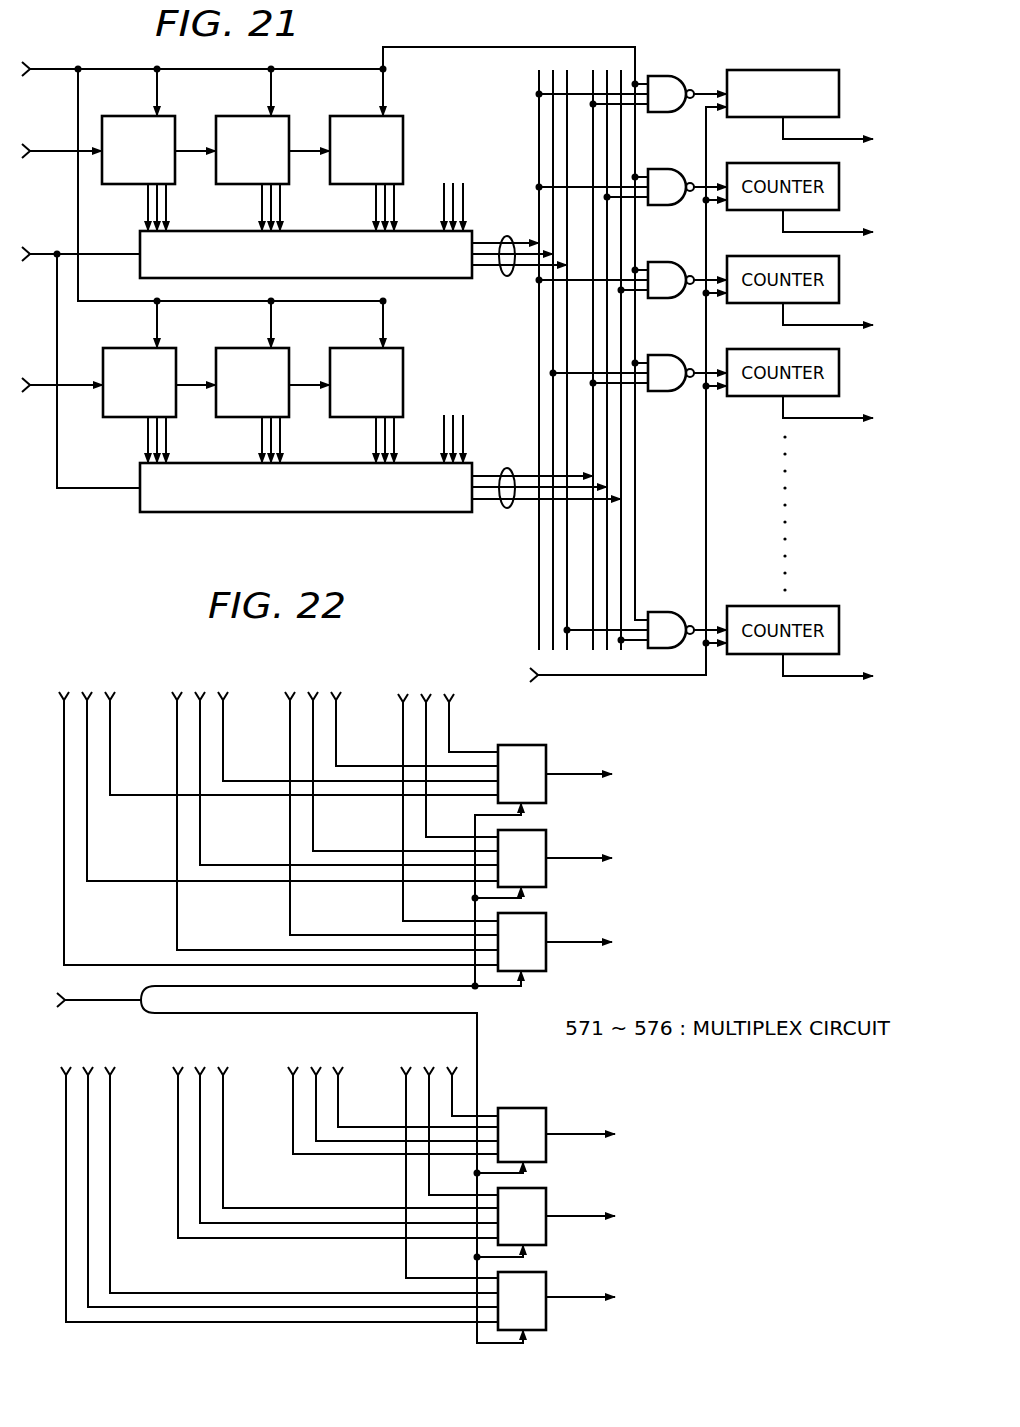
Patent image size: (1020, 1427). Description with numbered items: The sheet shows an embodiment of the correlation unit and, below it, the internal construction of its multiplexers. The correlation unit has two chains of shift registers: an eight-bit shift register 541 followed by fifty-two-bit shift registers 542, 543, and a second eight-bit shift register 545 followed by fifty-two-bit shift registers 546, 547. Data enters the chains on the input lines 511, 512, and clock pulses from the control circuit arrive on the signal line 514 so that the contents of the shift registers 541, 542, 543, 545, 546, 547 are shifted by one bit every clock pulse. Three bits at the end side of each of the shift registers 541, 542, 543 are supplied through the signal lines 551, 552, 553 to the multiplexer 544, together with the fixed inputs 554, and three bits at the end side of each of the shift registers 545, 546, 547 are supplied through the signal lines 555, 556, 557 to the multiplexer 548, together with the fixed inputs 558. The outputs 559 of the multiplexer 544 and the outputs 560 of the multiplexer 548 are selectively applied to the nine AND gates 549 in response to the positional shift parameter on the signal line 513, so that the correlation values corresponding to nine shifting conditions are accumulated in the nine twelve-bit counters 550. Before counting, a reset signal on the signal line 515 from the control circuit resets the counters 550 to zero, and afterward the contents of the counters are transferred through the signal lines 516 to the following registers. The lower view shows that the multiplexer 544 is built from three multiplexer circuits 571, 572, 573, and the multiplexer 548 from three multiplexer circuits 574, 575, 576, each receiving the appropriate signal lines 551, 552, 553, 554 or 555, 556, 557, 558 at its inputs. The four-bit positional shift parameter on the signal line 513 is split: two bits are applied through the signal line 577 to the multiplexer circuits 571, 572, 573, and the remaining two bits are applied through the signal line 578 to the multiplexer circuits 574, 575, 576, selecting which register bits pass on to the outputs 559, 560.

In FIG. 21, the first data input line 511 is at (50, 141).
In FIG. 21, the second data input line 512 is at (37, 378).
In FIG. 21, the signal line 513 is at (48, 244).
In FIG. 22, the signal line 513 is at (77, 1001).
In FIG. 21, the signal line 514 is at (52, 60).
In FIG. 21, the signal line 515 is at (608, 397).
In FIG. 21, the signal lines 516 is at (838, 139).
In FIG. 21, the 8-bit shift register 541 is at (142, 115).
In FIG. 21, the 52-bit shift register 542 is at (256, 115).
In FIG. 21, the 52-bit shift register 543 is at (370, 115).
In FIG. 21, the multiplexer 544 is at (308, 231).
In FIG. 21, the 8-bit shift register 545 is at (142, 347).
In FIG. 21, the 52-bit shift register 546 is at (256, 347).
In FIG. 21, the 52-bit shift register 547 is at (370, 347).
In FIG. 21, the multiplexer 548 is at (140, 466).
In FIG. 21, the AND gate 549 is at (663, 77).
In FIG. 21, the 12-bit counter 550 is at (800, 70).
In FIG. 21, the signal lines 551 is at (168, 203).
In FIG. 22, the signal lines 551 is at (115, 691).
In FIG. 21, the signal lines 552 is at (282, 203).
In FIG. 22, the signal lines 552 is at (228, 691).
In FIG. 21, the signal lines 553 is at (396, 203).
In FIG. 22, the signal lines 553 is at (341, 691).
In FIG. 21, the high level input lines 554 is at (466, 207).
In FIG. 22, the high level input lines 554 is at (454, 683).
In FIG. 21, the signal lines 555 is at (168, 438).
In FIG. 22, the signal lines 555 is at (117, 1066).
In FIG. 21, the signal lines 556 is at (282, 438).
In FIG. 22, the signal lines 556 is at (229, 1066).
In FIG. 21, the signal lines 557 is at (396, 438).
In FIG. 22, the signal lines 557 is at (344, 1066).
In FIG. 21, the high level input lines 558 is at (466, 440).
In FIG. 22, the high level input lines 558 is at (457, 1056).
In FIG. 21, the multiplexer output lines 559 is at (507, 276).
In FIG. 22, the multiplexer output lines 559 is at (620, 768).
In FIG. 21, the multiplexer output lines 560 is at (507, 508).
In FIG. 22, the multiplexer output lines 560 is at (622, 1127).
In FIG. 22, the multiplexer circuit 571 is at (545, 746).
In FIG. 22, the multiplexer circuit 572 is at (545, 831).
In FIG. 22, the multiplexer circuit 573 is at (545, 914).
In FIG. 22, the multiplexer circuit 574 is at (547, 1109).
In FIG. 22, the multiplexer circuit 575 is at (547, 1189).
In FIG. 22, the multiplexer circuit 576 is at (547, 1273).
In FIG. 22, the signal line 577 is at (254, 987).
In FIG. 22, the signal line 578 is at (340, 1013).